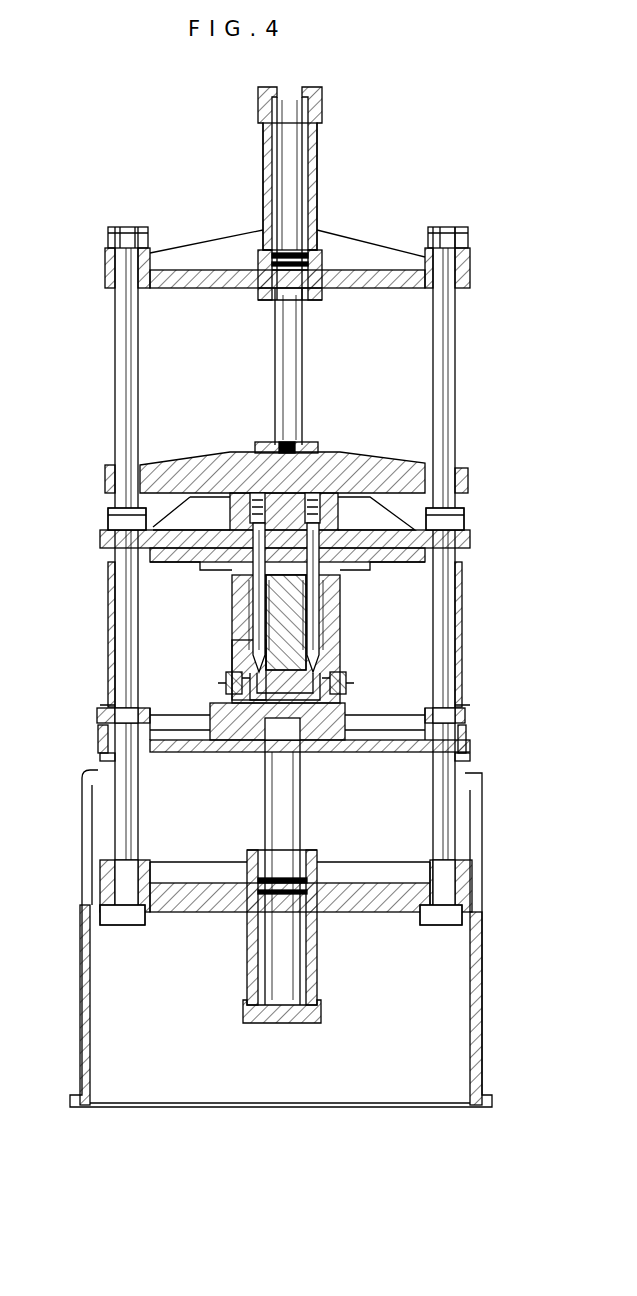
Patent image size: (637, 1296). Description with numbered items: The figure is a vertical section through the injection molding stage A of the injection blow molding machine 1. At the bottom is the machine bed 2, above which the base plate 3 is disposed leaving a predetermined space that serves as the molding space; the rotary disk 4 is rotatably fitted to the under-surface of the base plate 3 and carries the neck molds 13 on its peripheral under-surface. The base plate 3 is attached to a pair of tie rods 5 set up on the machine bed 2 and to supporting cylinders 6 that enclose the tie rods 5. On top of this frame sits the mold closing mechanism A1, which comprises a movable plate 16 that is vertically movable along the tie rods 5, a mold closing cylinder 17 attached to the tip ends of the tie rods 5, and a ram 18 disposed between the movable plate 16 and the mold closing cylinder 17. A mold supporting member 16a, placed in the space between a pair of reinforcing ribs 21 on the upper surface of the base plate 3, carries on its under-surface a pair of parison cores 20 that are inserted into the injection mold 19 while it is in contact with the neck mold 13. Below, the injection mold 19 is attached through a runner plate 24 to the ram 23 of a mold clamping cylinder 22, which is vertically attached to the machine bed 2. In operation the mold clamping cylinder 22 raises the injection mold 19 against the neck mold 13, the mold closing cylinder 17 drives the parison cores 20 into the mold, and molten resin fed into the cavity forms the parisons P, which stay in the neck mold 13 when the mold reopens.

The molding machine 1 is at (100, 458).
The machine bed 2 is at (92, 787).
The base plate 3 is at (101, 540).
The rotary disk 4 is at (172, 563).
The tie rods 5 is at (122, 325).
The supporting cylinders 6 is at (108, 616).
The neck mold 13 is at (342, 595).
The movable plate 16 is at (200, 452).
The mold supporting member 16a is at (322, 458).
The mold closing cylinder 17 is at (268, 168).
The ram 18 is at (294, 355).
The injection mold 19 is at (245, 672).
The parison cores 20 is at (257, 614).
The reinforcing ribs 21 is at (384, 505).
The mold clamping cylinder 22 is at (312, 984).
The ram 23 is at (285, 811).
The runner plate 24 is at (335, 701).
The injection molding stage A is at (396, 617).
The mold closing mechanism A1 is at (335, 162).
The parisons P is at (262, 641).